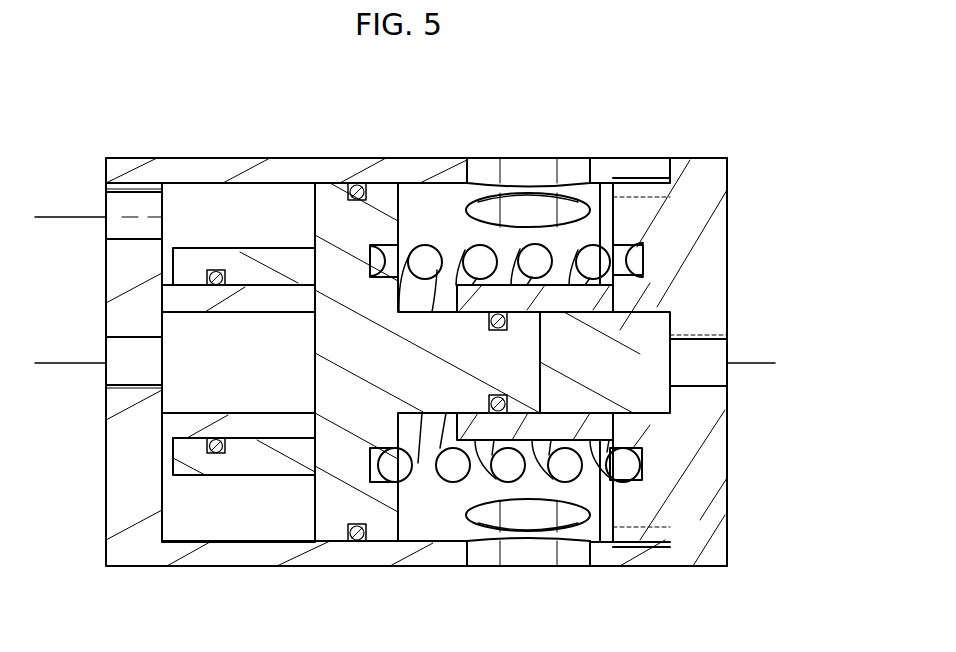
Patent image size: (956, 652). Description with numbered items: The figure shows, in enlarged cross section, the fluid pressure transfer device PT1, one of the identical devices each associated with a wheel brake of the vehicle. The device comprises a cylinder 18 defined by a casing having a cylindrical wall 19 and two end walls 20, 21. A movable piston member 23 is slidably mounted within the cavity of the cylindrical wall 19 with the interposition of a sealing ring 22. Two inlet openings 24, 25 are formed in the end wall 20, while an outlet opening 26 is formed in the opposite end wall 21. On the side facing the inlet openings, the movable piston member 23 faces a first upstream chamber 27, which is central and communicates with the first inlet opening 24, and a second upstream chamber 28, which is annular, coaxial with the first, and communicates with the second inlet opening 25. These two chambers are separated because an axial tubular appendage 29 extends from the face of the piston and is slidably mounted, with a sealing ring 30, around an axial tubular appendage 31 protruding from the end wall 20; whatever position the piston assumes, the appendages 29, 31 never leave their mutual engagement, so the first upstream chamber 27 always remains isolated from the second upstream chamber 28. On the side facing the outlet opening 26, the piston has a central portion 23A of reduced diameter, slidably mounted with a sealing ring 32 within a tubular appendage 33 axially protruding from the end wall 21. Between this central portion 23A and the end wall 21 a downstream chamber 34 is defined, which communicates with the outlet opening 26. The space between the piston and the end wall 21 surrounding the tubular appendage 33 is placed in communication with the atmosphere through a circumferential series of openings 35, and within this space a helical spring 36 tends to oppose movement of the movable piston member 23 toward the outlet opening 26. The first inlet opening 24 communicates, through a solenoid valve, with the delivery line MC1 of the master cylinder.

The cylinder 18 is at (423, 151).
The cylindrical wall 19 is at (270, 566).
The end wall 20 is at (113, 518).
The end wall 21 is at (735, 445).
The sealing ring 22 is at (367, 533).
The movable piston member 23 is at (342, 224).
The central portion of reduced diameter 23A is at (500, 352).
The first inlet opening 24 is at (128, 358).
The second inlet opening 25 is at (118, 203).
The outlet opening 26 is at (697, 362).
The first upstream chamber 27 is at (186, 383).
The second upstream chamber 28 is at (185, 515).
The axial tubular appendage 29 is at (287, 480).
The sealing ring 30 is at (222, 278).
The axial tubular appendage 31 is at (255, 418).
The sealing ring 32 is at (502, 395).
The tubular appendage 33 is at (572, 415).
The downstream chamber 34 is at (667, 327).
The openings 35 is at (530, 215).
The helical spring 36 is at (438, 482).
The fluid pressure transfer device PT1 is at (228, 136).
The delivery line of the master cylinder MC1 is at (62, 364).